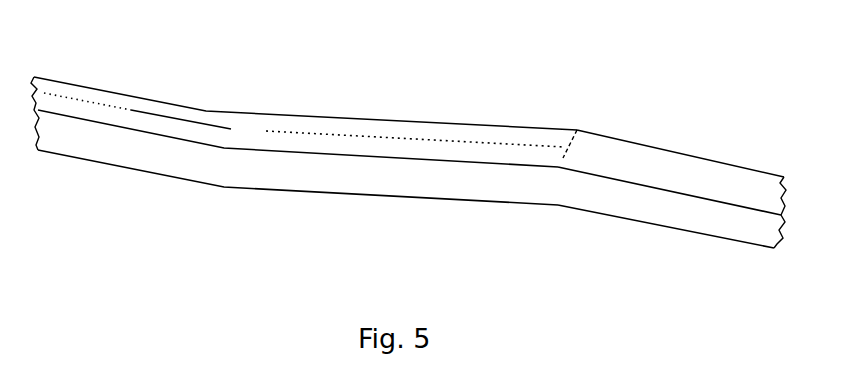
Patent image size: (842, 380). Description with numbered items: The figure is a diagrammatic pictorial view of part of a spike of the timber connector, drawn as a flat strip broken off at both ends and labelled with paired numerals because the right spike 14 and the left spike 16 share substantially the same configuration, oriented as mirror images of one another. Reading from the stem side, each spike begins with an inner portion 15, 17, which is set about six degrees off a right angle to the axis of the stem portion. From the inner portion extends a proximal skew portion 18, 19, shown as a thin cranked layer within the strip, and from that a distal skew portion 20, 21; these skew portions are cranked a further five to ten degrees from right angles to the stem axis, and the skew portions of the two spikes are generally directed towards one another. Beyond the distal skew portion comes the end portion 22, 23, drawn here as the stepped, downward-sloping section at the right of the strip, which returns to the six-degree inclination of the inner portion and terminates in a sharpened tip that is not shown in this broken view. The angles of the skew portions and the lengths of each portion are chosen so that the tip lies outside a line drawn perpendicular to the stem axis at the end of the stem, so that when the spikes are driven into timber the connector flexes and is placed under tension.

The right spike 14 is at (679, 114).
The left spike 16 is at (580, 92).
The inner portion 15 is at (304, 96).
The inner portion 17 is at (65, 103).
The proximal skew portion 18 is at (304, 95).
The proximal skew portion 19 is at (180, 112).
The distal skew portion 20 is at (298, 190).
The distal skew portion 21 is at (300, 176).
The end portion 22 is at (671, 260).
The end portion 23 is at (643, 203).